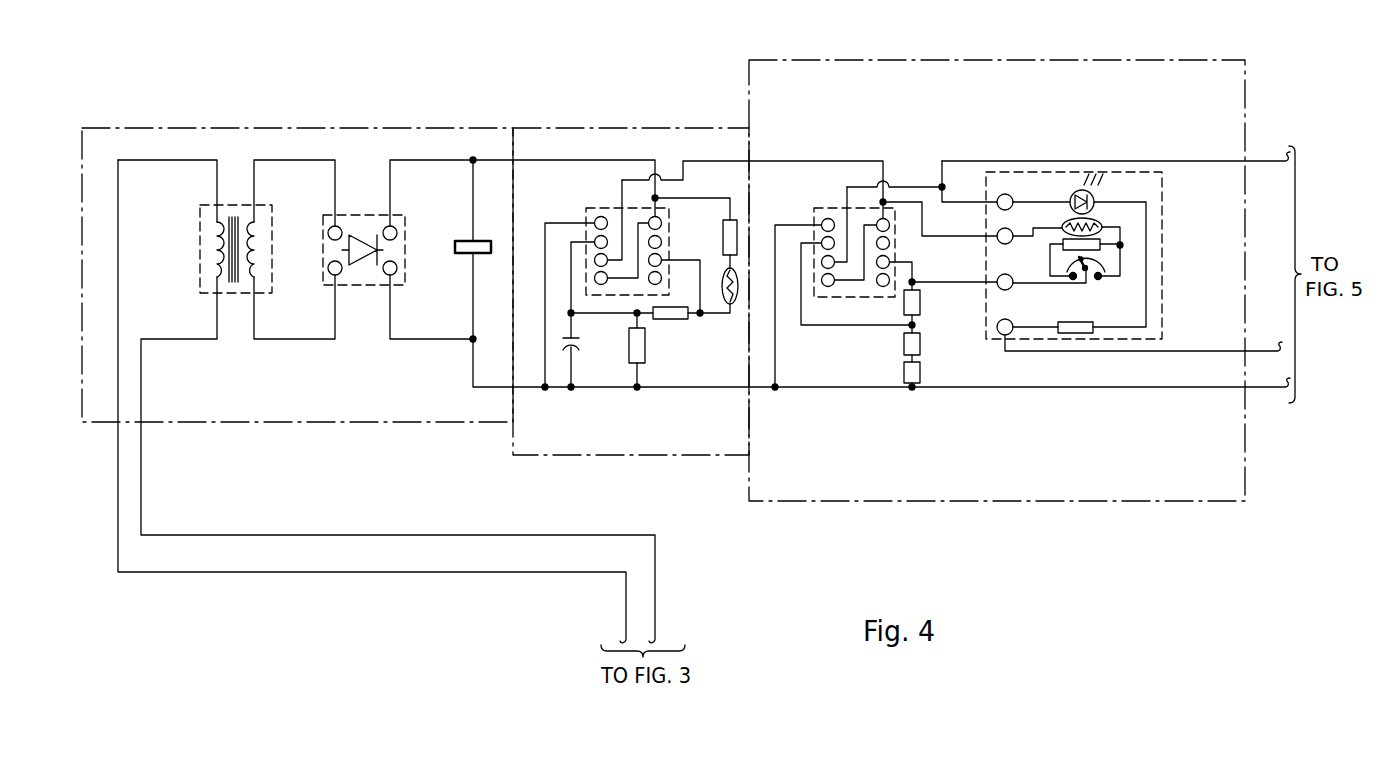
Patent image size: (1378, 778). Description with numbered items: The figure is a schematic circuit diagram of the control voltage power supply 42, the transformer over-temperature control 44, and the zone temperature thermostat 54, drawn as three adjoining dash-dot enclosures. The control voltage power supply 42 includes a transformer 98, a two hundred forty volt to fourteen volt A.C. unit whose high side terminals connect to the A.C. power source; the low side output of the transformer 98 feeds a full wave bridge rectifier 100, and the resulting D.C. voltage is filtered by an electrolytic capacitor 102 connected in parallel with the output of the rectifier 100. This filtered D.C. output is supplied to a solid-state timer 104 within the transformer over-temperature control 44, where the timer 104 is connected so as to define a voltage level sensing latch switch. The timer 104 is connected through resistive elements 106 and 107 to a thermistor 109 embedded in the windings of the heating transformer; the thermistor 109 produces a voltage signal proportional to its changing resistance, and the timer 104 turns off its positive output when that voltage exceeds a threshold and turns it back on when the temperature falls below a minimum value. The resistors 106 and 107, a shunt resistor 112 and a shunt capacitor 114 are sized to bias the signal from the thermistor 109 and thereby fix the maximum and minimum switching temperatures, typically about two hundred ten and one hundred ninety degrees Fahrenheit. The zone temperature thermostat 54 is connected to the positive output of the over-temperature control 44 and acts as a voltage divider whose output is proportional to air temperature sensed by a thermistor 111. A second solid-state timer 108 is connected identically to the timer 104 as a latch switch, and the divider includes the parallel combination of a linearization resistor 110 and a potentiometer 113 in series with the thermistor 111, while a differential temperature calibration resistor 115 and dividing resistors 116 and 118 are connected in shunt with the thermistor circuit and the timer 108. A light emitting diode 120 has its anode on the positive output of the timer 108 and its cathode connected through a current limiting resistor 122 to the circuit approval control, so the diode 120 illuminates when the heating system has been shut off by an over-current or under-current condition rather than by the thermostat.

The control voltage power supply 42 is at (247, 145).
The transformer over-temperature control 44 is at (563, 144).
The zone temperature thermostat 54 is at (842, 73).
The transformer 98 is at (272, 228).
The full wave bridge rectifier 100 is at (403, 215).
The electrolytic capacitor 102 is at (473, 241).
The solid-state timer 104 is at (608, 296).
The resistive element 106 is at (683, 320).
The resistive element 107 is at (723, 229).
The solid-state timer 108 is at (840, 298).
The thermistor 109 is at (737, 302).
The linearization resistor 110 is at (1056, 240).
The thermistor 111 is at (1097, 223).
The shunt resistor 112 is at (645, 354).
The potentiometer 113 is at (1090, 279).
The shunt capacitor 114 is at (574, 348).
The differential temperature calibration resistor 115 is at (920, 378).
The dividing resistor 116 is at (920, 343).
The dividing resistor 118 is at (921, 293).
The light emitting diode 120 is at (1073, 194).
The current limiting resistor 122 is at (1067, 322).